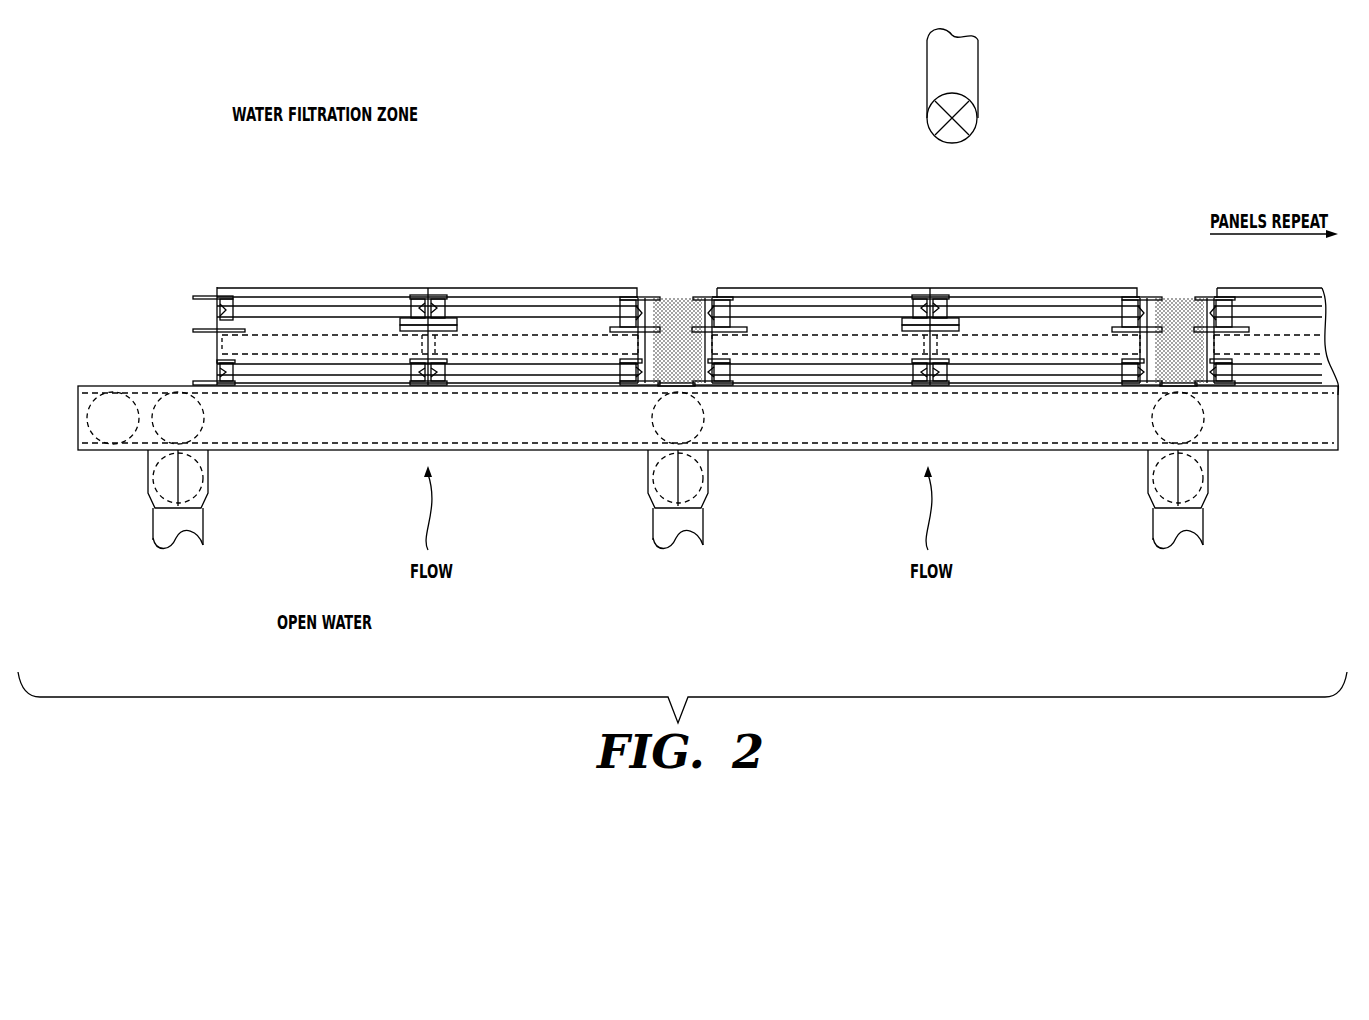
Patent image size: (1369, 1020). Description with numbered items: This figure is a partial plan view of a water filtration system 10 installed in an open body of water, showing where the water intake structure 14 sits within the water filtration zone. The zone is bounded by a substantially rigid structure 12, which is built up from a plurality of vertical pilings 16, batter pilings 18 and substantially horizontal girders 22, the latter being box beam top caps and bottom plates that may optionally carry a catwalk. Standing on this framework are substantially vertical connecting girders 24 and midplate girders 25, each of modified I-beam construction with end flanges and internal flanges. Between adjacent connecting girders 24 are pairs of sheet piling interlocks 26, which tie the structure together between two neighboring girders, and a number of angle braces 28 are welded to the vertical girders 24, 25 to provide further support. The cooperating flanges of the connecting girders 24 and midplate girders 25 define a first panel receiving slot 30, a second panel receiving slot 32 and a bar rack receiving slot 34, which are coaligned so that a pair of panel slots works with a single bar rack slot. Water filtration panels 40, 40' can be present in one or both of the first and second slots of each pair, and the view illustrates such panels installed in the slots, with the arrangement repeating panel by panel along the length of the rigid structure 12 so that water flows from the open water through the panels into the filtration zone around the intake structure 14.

The water filtration system 10 is at (1108, 190).
The substantially rigid structure 12 is at (72, 356).
The water intake structure 14 is at (970, 75).
The vertical pilings 16 is at (178, 400).
The batter pilings 18 is at (113, 432).
The substantially horizontal girders 22 is at (540, 438).
The connecting girders 24 is at (710, 298).
The midplate girders 25 is at (428, 297).
The sheet piling interlocks 26 is at (683, 385).
The angle braces 28 is at (540, 288).
The first panel receiving slot 30 is at (228, 297).
The second panel receiving slot 32 is at (222, 345).
The bar rack receiving slot 34 is at (218, 383).
The water filtration panel 40 is at (772, 273).
The water filtration panel 40' is at (772, 283).